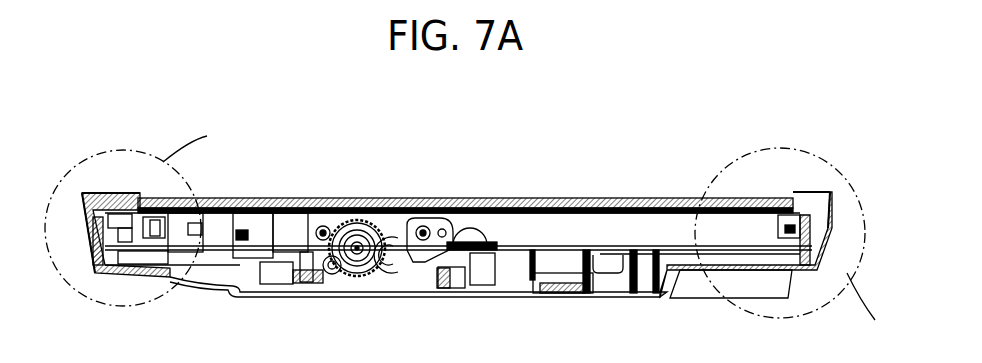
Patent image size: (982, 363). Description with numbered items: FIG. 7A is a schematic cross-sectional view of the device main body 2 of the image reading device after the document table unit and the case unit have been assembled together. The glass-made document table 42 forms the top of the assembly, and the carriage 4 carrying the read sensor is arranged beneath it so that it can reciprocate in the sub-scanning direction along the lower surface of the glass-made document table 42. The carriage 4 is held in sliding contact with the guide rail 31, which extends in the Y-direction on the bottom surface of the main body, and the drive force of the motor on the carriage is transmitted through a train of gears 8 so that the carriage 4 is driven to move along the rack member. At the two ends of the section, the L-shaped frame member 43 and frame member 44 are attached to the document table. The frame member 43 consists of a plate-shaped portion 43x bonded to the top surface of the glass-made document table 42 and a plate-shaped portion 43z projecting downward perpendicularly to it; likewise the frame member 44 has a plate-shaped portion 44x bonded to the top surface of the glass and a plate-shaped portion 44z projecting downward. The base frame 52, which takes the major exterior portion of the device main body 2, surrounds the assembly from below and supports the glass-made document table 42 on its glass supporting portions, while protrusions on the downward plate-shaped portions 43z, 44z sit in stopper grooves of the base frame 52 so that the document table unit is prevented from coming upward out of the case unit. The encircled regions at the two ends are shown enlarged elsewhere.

The device main body 2 is at (696, 146).
The carriage 4 is at (647, 197).
The train of gears 8 is at (360, 268).
The guide rail 31 is at (470, 292).
The glass-made document table 42 is at (540, 197).
The frame member 43 is at (80, 187).
The plate-shaped portion 43x is at (112, 193).
The plate-shaped portion 43z is at (83, 222).
The frame member 44 is at (829, 187).
The plate-shaped portion 44x is at (815, 190).
The plate-shaped portion 44z is at (829, 212).
The base frame 52 is at (303, 295).